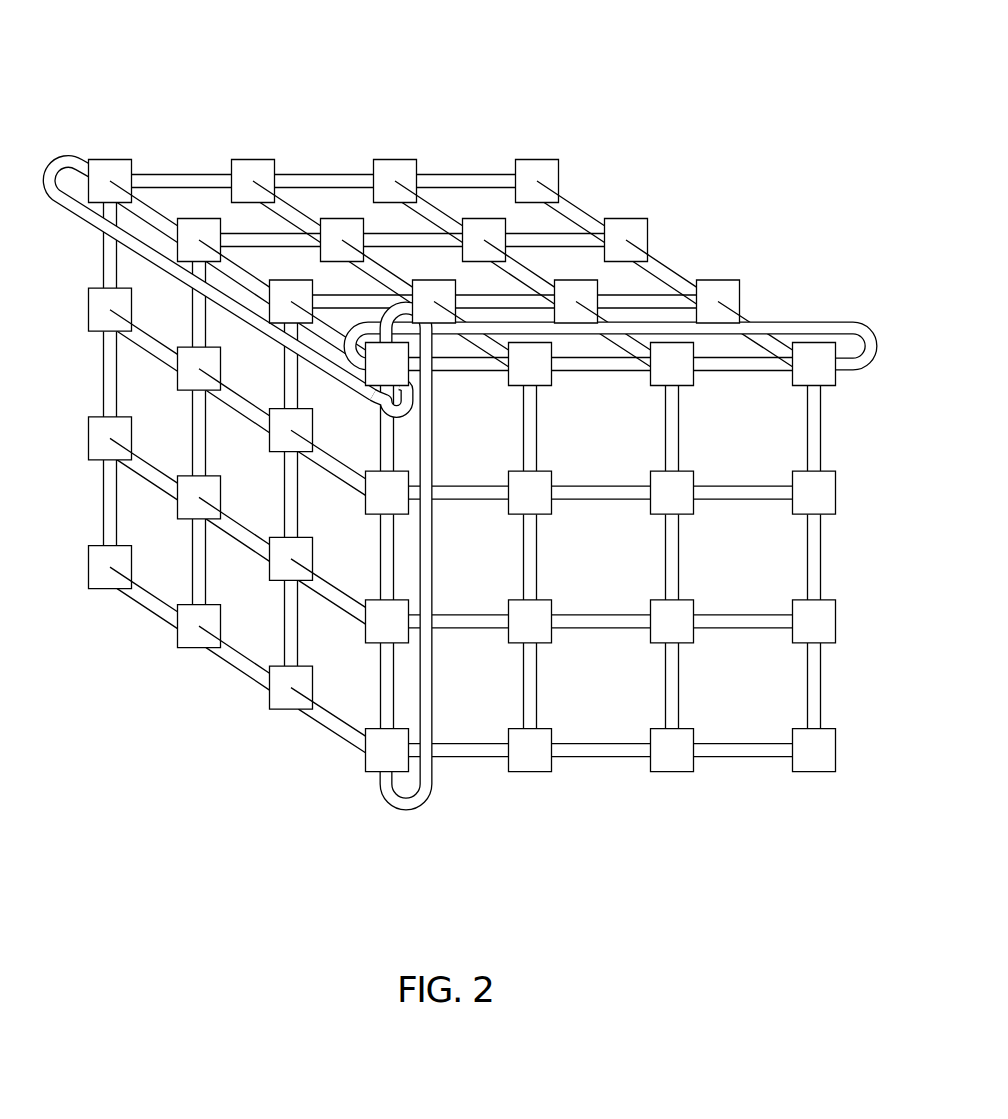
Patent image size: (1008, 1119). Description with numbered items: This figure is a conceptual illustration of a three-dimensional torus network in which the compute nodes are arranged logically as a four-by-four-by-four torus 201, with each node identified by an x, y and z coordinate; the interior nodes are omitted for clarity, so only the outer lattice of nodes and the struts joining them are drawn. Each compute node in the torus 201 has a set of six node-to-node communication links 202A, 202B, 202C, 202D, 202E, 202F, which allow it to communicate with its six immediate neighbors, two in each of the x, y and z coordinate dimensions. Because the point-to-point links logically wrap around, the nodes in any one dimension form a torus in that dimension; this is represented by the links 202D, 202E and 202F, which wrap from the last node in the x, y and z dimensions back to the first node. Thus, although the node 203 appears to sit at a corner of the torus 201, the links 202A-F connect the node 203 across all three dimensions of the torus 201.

The torus 201 is at (606, 90).
The node-to-node communication link 202A is at (448, 373).
The node-to-node communication link 202B is at (397, 448).
The node-to-node communication link 202C is at (352, 330).
The node-to-node communication link 202D is at (845, 323).
The node-to-node communication link 202E is at (398, 811).
The node-to-node communication link 202F is at (48, 157).
The node 203 is at (368, 394).